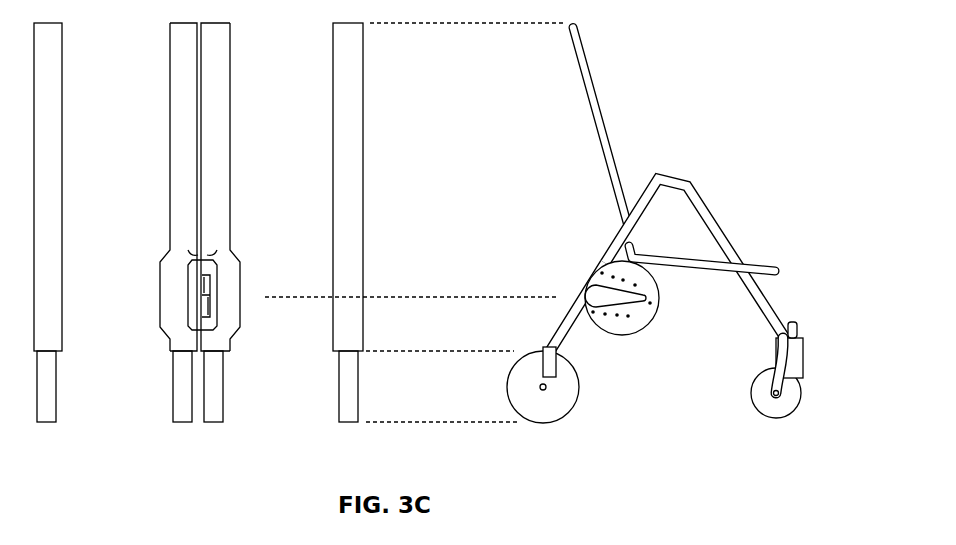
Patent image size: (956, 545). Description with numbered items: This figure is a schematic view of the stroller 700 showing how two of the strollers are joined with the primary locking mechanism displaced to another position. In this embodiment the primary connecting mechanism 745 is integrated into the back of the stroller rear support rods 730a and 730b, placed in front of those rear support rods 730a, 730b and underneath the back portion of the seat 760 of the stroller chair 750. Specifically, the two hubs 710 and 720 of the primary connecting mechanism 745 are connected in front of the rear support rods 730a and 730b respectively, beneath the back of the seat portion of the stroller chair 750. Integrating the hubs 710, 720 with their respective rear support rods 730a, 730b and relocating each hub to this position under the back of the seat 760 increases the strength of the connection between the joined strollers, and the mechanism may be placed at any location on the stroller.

The walker 700 is at (666, 226).
The hub 710 is at (197, 298).
The hub 720 is at (662, 299).
The rear support rod 730a is at (170, 163).
The rear support rod 730b is at (230, 132).
The primary connecting mechanism 745 is at (200, 250).
The stroller chair 750 is at (591, 90).
The seat 760 is at (758, 263).